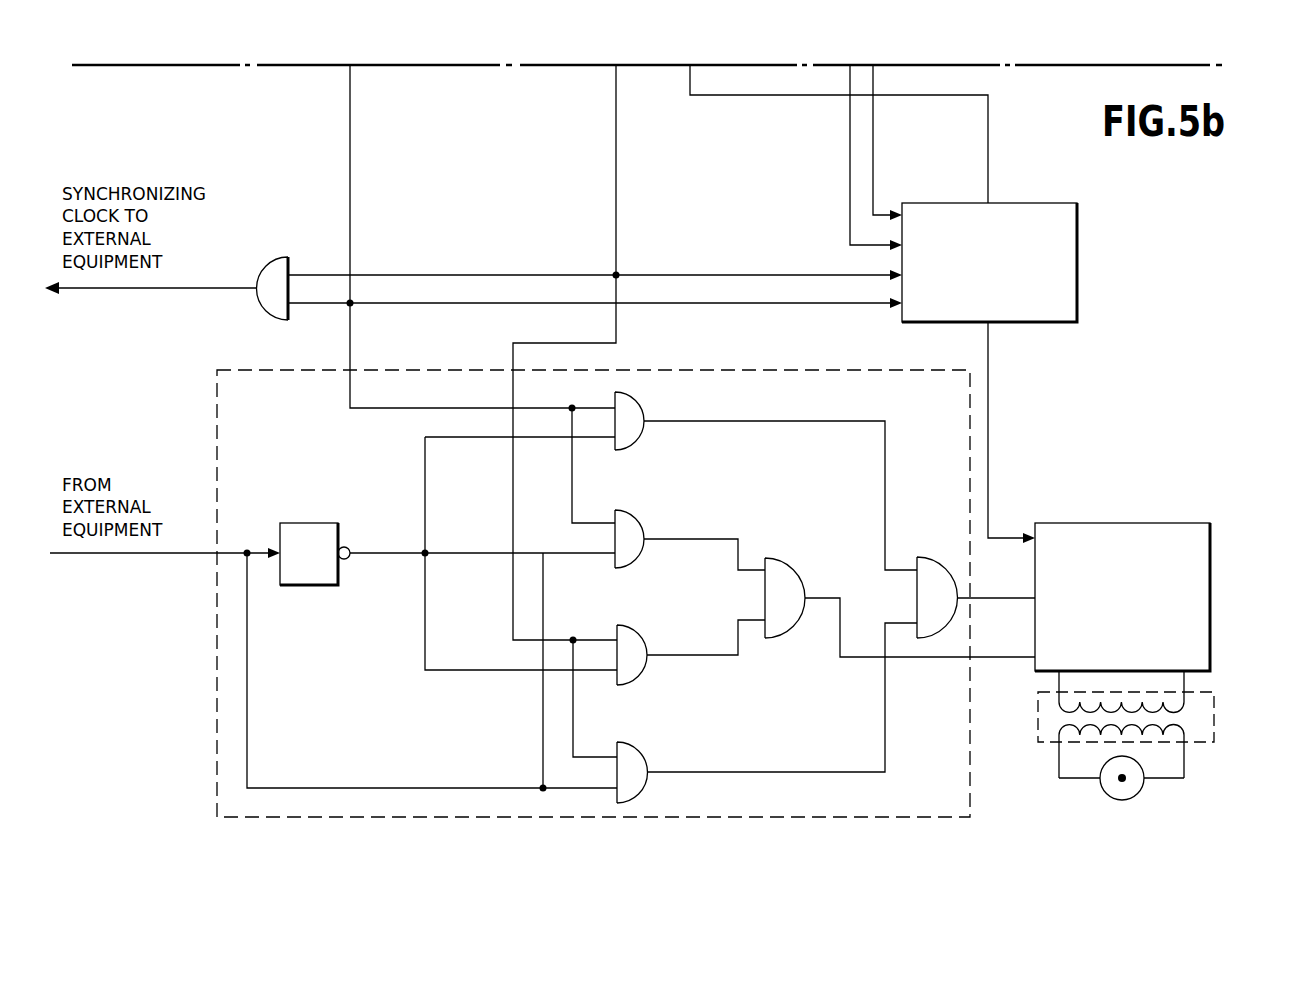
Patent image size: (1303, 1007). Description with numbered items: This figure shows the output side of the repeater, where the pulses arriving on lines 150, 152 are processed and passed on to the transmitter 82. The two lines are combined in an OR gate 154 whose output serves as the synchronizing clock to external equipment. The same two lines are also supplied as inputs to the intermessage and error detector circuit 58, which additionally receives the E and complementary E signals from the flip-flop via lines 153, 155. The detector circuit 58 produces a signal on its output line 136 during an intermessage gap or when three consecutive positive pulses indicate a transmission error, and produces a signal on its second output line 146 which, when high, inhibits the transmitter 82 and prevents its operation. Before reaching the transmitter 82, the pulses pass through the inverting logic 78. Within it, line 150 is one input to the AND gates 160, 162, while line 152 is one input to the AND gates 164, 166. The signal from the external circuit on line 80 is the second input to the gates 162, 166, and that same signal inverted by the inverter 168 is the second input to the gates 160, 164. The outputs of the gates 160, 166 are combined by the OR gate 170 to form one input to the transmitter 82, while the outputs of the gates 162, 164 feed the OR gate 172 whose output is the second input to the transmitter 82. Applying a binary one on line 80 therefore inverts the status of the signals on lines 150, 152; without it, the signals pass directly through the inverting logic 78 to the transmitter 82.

The intermessage and error detector circuit 58 is at (1050, 203).
The inverting logic 78 is at (796, 370).
The line from external circuit 80 is at (134, 558).
The transmitter 82 is at (1158, 522).
The output line 136 is at (706, 96).
The output line 146 is at (1000, 378).
The line 150 is at (352, 196).
The line 152 is at (616, 160).
The line 153 is at (848, 142).
The OR gate 154 is at (266, 310).
The line 155 is at (876, 146).
The AND gate 160 is at (646, 414).
The AND gate 162 is at (644, 522).
The AND gate 164 is at (636, 634).
The AND gate 166 is at (639, 752).
The inverter 168 is at (320, 522).
The OR gate 170 is at (924, 556).
The OR gate 172 is at (780, 558).